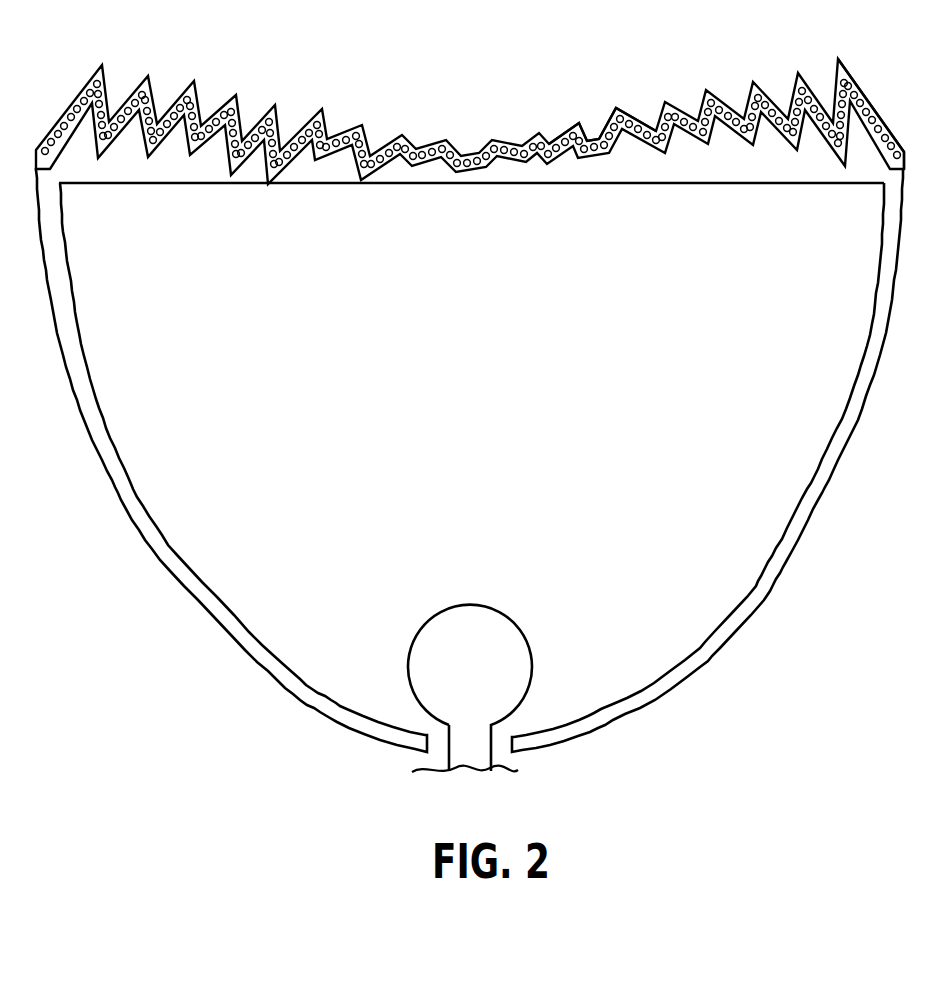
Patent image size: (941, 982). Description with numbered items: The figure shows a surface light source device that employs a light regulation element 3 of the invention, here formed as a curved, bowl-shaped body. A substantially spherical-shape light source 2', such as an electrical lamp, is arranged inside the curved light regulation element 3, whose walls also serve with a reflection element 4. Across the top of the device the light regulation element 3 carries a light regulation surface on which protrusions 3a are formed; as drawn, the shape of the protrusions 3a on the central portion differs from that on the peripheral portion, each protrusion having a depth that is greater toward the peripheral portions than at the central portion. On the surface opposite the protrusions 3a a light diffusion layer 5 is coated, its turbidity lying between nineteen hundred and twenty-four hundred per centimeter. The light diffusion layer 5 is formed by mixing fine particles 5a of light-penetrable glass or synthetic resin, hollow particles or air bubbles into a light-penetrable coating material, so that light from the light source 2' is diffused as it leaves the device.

The substantially spherical-shape light source 2' is at (470, 688).
The light regulation element 3 is at (688, 163).
The protrusions 3a is at (857, 138).
The reflection element 4 is at (750, 578).
The light diffusion layer 5 is at (456, 150).
The fine particles 5a is at (632, 114).